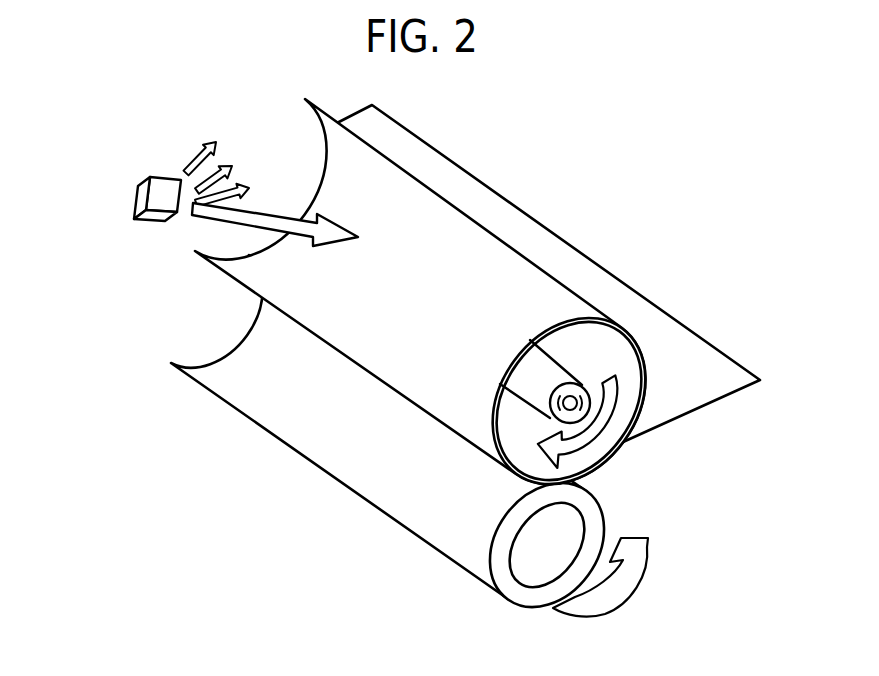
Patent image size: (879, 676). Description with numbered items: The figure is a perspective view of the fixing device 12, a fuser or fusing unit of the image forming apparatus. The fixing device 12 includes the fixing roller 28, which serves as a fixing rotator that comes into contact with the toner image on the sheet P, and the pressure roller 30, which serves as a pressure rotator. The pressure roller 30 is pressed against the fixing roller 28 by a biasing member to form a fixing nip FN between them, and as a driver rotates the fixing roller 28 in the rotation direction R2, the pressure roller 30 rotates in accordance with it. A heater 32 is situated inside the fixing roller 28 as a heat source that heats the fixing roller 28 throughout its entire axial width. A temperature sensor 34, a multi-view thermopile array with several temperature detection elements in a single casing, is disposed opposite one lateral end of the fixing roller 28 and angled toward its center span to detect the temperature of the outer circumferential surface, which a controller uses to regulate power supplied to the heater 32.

The fixing device 12 is at (588, 180).
The fixing roller 28 is at (393, 372).
The pressure roller 30 is at (398, 506).
The heater 32 is at (552, 373).
The temperature sensor 34 is at (137, 197).
The sheet P is at (697, 404).
The fixing nip FN is at (553, 487).
The rotation direction R2 is at (603, 423).